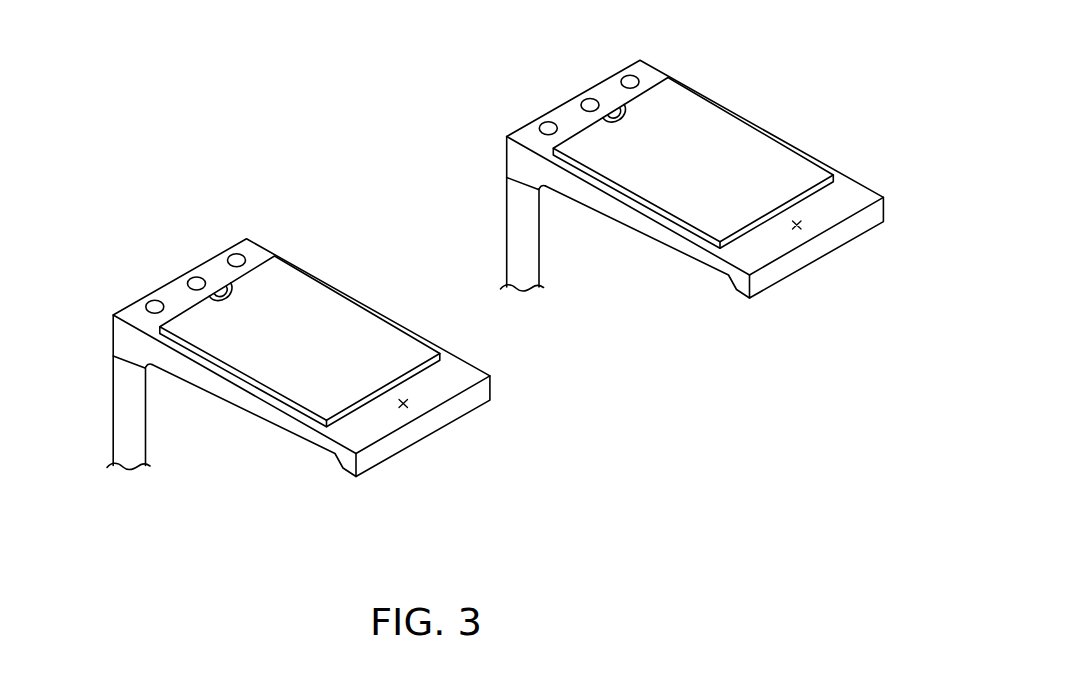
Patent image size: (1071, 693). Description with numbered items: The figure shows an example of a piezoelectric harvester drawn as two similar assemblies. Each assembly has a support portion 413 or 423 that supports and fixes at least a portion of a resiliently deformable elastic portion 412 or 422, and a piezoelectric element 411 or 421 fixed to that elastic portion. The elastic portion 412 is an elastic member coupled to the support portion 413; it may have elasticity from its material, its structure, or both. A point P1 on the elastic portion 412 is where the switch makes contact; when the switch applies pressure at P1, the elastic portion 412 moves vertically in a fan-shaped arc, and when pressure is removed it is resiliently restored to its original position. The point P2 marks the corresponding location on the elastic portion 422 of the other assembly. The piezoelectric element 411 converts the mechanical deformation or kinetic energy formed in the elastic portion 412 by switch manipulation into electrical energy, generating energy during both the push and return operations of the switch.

The piezoelectric element 411 is at (643, 193).
The elastic portion 412 is at (742, 281).
The support portion 413 is at (520, 237).
The contact point P1 is at (800, 226).
The second jig 421 is at (266, 373).
The second protrusion 422 is at (348, 459).
The second support leg 423 is at (122, 402).
The second reference point P2 is at (406, 404).